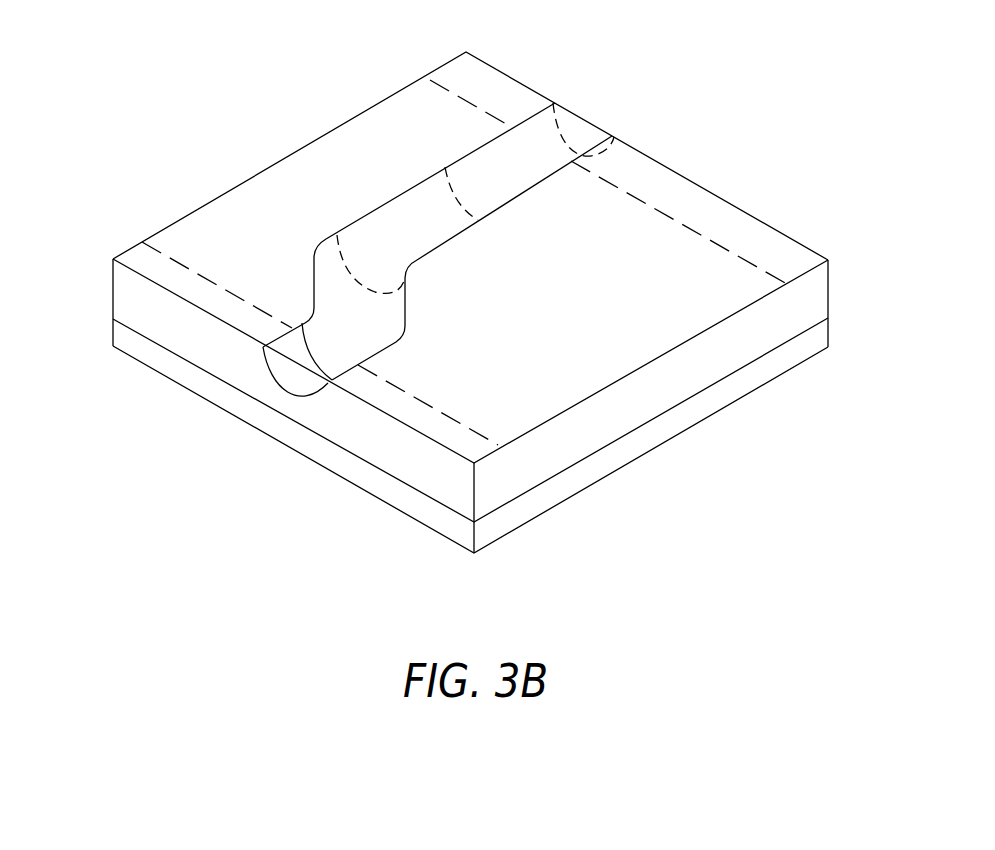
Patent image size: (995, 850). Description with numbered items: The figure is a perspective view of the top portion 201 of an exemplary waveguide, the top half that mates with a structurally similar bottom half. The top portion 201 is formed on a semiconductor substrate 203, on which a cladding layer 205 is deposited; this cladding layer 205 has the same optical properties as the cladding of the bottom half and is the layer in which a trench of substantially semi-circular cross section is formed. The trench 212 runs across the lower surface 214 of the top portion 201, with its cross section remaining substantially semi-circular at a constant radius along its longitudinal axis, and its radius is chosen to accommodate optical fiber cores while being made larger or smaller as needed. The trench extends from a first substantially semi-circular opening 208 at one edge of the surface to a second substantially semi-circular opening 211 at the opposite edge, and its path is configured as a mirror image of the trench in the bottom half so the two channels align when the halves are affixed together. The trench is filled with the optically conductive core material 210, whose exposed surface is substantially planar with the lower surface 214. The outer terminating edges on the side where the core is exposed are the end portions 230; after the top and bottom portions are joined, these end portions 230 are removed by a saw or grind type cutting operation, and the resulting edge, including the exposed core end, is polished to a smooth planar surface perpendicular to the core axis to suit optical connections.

The top portion 201 is at (475, 406).
The substrate 203 is at (123, 347).
The cladding layer 205 is at (123, 296).
The first substantially semi-circular opening 208 is at (308, 402).
The optically conductive core material 210 is at (392, 234).
The second substantially semi-circular opening 211 is at (585, 125).
The trench 212 is at (482, 145).
The lower surface 214 is at (274, 249).
The end portions 230 is at (457, 78).